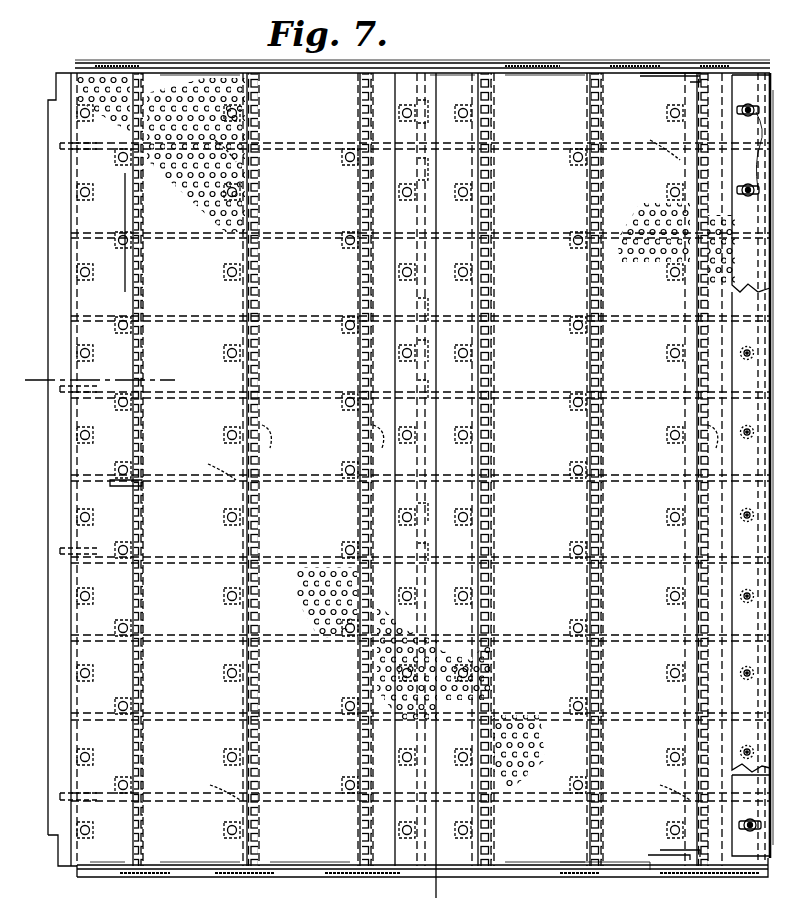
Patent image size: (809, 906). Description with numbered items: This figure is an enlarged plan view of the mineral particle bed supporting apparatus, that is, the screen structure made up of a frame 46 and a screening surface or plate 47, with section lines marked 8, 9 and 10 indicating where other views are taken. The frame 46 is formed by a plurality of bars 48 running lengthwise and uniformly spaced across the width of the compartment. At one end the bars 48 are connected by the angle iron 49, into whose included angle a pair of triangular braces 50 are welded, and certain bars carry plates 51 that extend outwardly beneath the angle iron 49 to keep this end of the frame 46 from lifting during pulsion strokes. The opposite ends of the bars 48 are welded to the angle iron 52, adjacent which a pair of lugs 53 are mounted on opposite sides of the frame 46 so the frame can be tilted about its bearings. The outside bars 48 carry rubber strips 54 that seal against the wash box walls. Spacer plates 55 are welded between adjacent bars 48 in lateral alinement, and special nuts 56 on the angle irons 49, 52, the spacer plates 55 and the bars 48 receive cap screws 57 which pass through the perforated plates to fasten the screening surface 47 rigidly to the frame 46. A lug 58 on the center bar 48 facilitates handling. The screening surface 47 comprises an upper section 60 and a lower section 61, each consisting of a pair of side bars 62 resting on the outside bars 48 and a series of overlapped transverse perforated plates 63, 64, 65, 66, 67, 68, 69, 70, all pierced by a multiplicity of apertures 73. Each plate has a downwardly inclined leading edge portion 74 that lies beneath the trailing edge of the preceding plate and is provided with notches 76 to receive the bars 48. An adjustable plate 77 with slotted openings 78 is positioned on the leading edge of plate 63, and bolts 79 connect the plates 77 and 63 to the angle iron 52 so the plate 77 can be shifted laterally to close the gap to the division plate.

The section line 8- 8 is at (30, 382).
The section line 9- 9 is at (121, 193).
The section line 10- 10 is at (458, 457).
The frame 46 is at (600, 862).
The screening surface or plate 47 is at (545, 858).
The bars 48 is at (310, 150).
The angle iron 49 is at (54, 746).
The triangular braces 50 is at (64, 318).
The plates 51 is at (60, 146).
The angle iron 52 is at (760, 622).
The lugs 53 is at (688, 78).
The rubber strips 54 is at (538, 62).
The spacer plates 55 is at (668, 778).
The special nuts 56 is at (672, 358).
The cap screws 57 is at (225, 598).
The lug 58 is at (130, 488).
The upper section 60 is at (618, 62).
The lower section 61 is at (372, 70).
The side bars 62 is at (174, 76).
The perforated plate 63 is at (726, 78).
The perforated plate 64 is at (625, 80).
The perforated plate 65 is at (565, 85).
The perforated plate 66 is at (448, 80).
The perforated plate 67 is at (388, 856).
The perforated plate 68 is at (275, 856).
The perforated plate 69 is at (210, 78).
The perforated plate 70 is at (118, 856).
The apertures 73 is at (195, 195).
The leading edge portion 74 is at (262, 437).
The notches 76 is at (492, 225).
The adjustable plate 77 is at (758, 112).
The slotted openings 78 is at (768, 160).
The bolts 79 is at (760, 196).